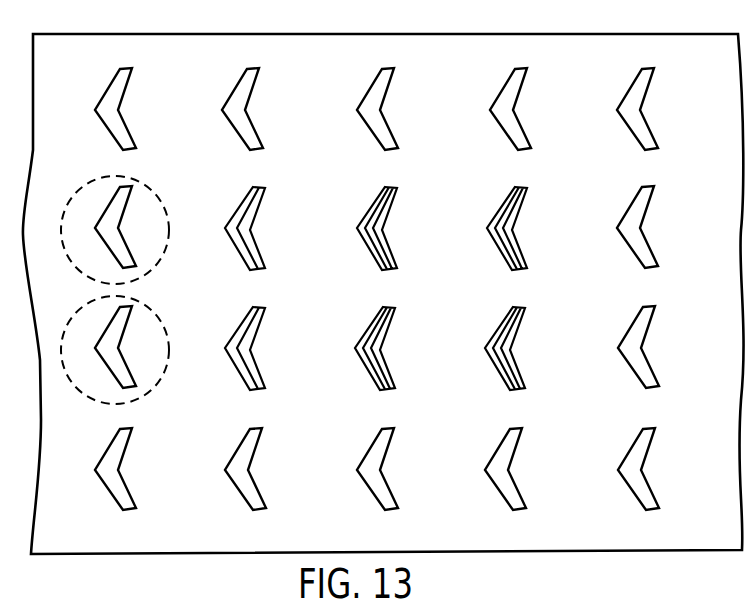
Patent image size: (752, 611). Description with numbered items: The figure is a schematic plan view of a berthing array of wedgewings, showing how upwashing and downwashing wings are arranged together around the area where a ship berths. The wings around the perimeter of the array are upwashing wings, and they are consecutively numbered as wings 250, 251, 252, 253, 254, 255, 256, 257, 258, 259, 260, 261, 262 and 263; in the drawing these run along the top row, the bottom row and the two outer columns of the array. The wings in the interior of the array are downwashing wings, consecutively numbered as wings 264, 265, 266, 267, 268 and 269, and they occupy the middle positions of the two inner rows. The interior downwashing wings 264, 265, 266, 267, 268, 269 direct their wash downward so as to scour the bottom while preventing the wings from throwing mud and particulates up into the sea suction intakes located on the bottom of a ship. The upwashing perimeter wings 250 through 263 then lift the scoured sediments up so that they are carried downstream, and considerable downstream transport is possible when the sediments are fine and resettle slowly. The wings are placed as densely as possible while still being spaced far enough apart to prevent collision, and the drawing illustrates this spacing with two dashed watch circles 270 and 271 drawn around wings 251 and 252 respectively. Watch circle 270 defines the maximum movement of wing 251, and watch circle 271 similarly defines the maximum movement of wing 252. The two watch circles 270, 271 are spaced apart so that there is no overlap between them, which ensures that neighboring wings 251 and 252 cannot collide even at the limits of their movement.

The upwashing perimeter wing 250 is at (108, 95).
The upwashing perimeter wing 251 is at (113, 200).
The upwashing perimeter wing 252 is at (113, 317).
The upwashing perimeter wing 253 is at (105, 450).
The upwashing perimeter wing 254 is at (237, 88).
The upwashing perimeter wing 255 is at (238, 452).
The upwashing perimeter wing 256 is at (377, 80).
The upwashing perimeter wing 257 is at (372, 447).
The upwashing perimeter wing 258 is at (507, 78).
The upwashing perimeter wing 259 is at (500, 448).
The upwashing perimeter wing 260 is at (630, 85).
The upwashing perimeter wing 261 is at (655, 188).
The upwashing perimeter wing 262 is at (658, 308).
The upwashing perimeter wing 263 is at (630, 450).
The downwashing interior wing 264 is at (263, 192).
The downwashing interior wing 265 is at (263, 312).
The downwashing interior wing 266 is at (395, 193).
The downwashing interior wing 267 is at (395, 313).
The downwashing interior wing 268 is at (525, 193).
The downwashing interior wing 269 is at (523, 312).
The watch circle 270 is at (163, 207).
The watch circle 271 is at (158, 315).